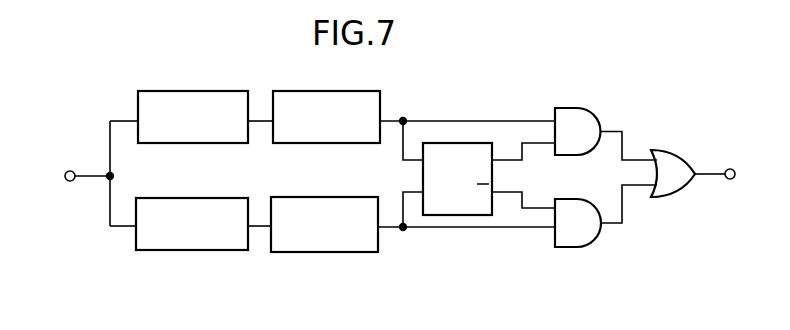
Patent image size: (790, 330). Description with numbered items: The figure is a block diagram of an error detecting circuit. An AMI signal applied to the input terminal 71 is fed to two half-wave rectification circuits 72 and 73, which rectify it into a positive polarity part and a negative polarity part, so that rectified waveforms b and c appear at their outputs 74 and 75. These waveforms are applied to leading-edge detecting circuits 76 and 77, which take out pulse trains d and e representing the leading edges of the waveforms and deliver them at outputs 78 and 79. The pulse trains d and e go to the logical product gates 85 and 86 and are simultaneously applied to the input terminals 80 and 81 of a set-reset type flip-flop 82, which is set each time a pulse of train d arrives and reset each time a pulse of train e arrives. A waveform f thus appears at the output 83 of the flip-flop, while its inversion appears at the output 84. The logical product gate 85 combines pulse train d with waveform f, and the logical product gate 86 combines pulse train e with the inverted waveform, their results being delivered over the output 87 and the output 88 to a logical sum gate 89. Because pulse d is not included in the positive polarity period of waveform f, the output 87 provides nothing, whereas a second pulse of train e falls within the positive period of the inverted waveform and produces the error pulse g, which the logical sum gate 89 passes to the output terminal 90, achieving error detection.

The input terminal 71 is at (68, 171).
The half-wave rectification circuit 72 is at (171, 91).
The half-wave rectification circuit 73 is at (208, 250).
The output 74 is at (256, 123).
The output 75 is at (259, 225).
The leading-edge detecting circuit 76 is at (312, 84).
The leading-edge detecting circuit 77 is at (336, 253).
The output 78 is at (392, 117).
The output 79 is at (394, 231).
The input terminal 80 is at (414, 158).
The input terminal 81 is at (413, 196).
The set-reset type flip-flop 82 is at (463, 216).
The output 83 is at (507, 158).
The output 84 is at (508, 194).
The logical product gate 85 is at (590, 110).
The logical product gate 86 is at (590, 246).
The output 87 is at (623, 142).
The AND gate output line 88 is at (623, 210).
The logical sum gate 89 is at (690, 189).
The output terminal 90 is at (729, 169).